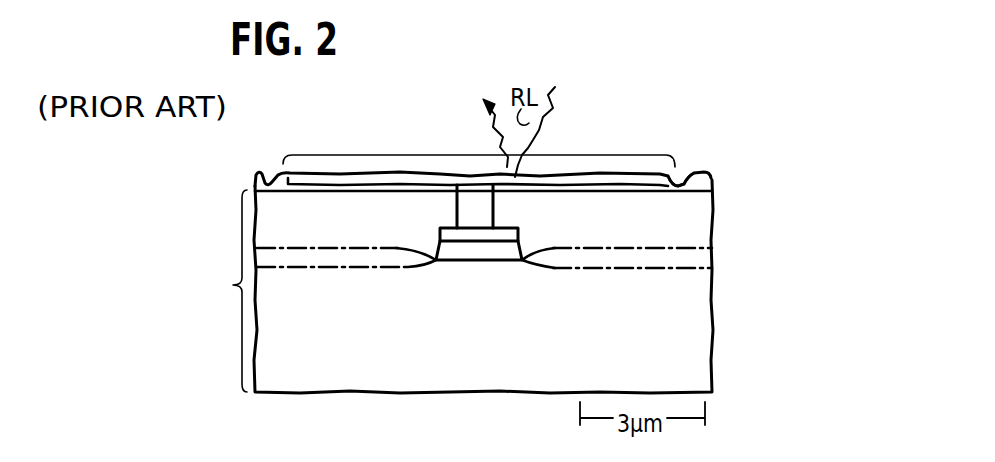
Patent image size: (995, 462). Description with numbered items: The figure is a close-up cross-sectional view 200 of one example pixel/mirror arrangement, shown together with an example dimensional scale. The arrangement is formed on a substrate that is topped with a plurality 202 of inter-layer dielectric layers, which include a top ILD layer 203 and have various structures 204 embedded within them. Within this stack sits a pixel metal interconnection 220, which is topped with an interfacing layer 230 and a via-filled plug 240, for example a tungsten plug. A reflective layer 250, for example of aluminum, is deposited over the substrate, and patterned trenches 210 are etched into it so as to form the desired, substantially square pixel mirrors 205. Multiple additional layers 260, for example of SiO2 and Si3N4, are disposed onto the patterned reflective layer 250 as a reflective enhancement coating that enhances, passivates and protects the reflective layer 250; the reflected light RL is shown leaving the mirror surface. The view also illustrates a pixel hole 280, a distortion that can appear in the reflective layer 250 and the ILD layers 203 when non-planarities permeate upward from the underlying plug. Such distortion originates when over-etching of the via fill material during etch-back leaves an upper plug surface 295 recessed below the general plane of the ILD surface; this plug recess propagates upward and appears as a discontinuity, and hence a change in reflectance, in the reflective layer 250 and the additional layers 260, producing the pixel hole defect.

The close-up cross-sectional view 200 is at (336, 122).
The plurality of inter-layer dielectric layers 202 is at (452, 286).
The top ILD layer 203 is at (348, 212).
The structures 204 is at (367, 243).
The pixel mirror 205 is at (473, 160).
The patterned trench 210 is at (687, 170).
The pixel metal interconnection 220 is at (476, 260).
The interfacing layer 230 is at (437, 250).
The via-filled plug 240 is at (457, 216).
The reflective layer 250 is at (587, 174).
The additional layers 260 is at (553, 184).
The pixel hole 280 is at (471, 168).
The upper plug surface 295 is at (464, 174).